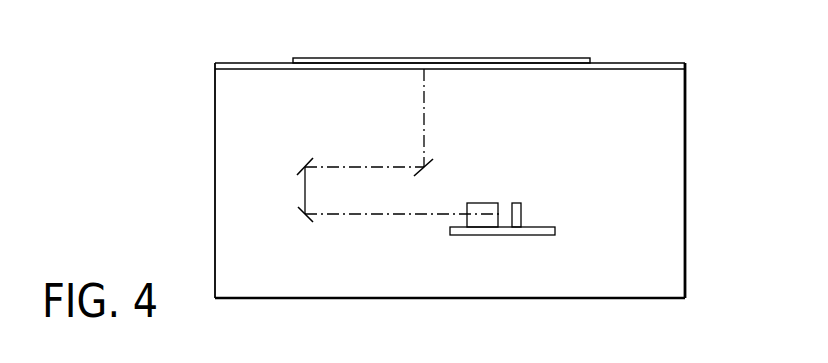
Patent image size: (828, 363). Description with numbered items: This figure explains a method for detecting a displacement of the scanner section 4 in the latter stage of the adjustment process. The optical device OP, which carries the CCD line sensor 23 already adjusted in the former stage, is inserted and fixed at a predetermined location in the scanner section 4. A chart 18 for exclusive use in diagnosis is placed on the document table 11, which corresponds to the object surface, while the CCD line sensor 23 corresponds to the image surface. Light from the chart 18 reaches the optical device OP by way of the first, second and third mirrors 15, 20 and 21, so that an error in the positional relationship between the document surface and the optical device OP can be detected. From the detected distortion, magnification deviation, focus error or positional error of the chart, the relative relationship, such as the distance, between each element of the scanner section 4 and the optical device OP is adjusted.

The scanner section 4 is at (215, 141).
The document table 11 is at (558, 60).
The chart for exclusive use in diagnosis 18 is at (453, 58).
The first mirror 15 is at (432, 165).
The second mirror 20 is at (311, 160).
The third mirror 21 is at (306, 221).
The CCD line sensor 23 is at (485, 203).
The optical device OP is at (538, 237).